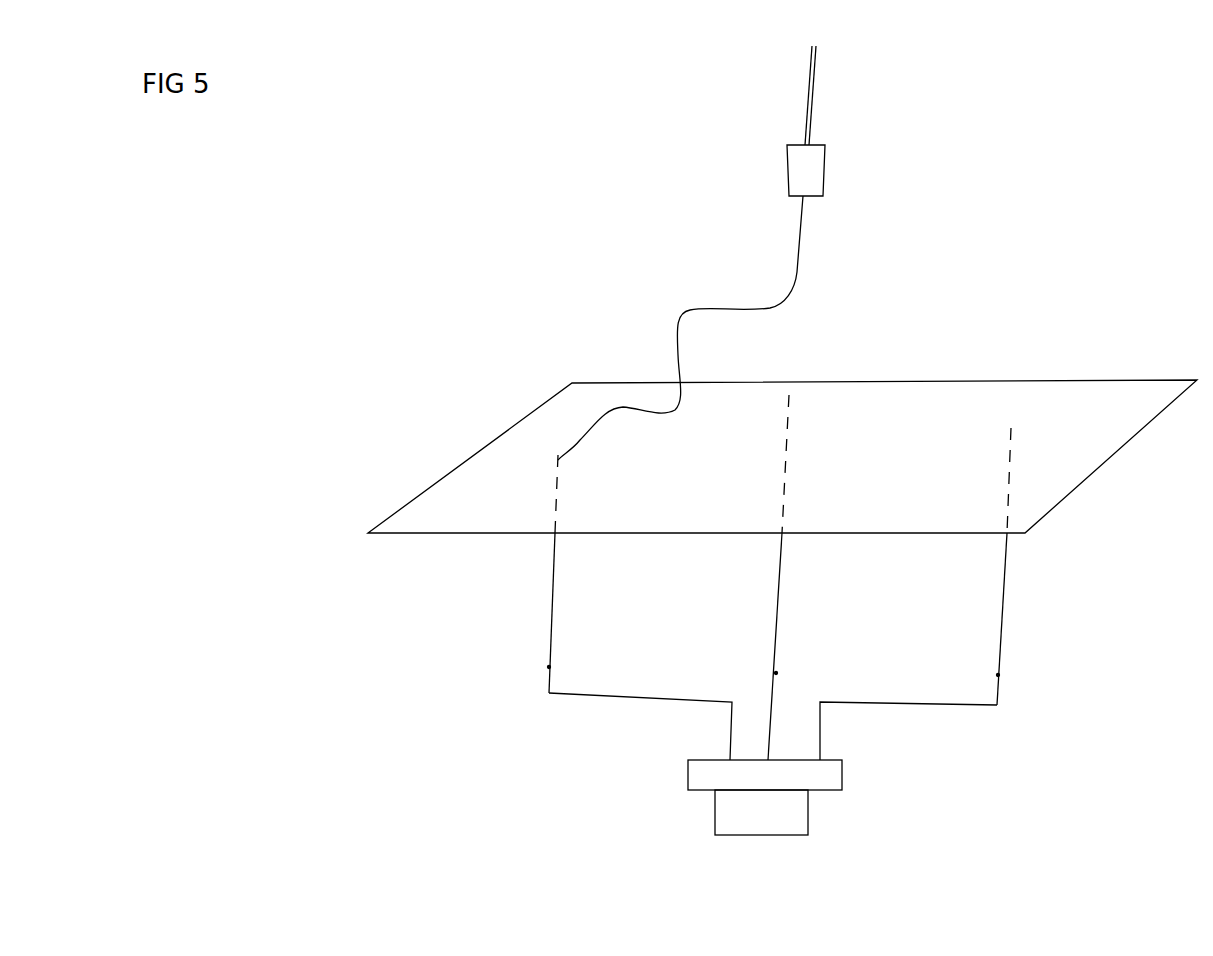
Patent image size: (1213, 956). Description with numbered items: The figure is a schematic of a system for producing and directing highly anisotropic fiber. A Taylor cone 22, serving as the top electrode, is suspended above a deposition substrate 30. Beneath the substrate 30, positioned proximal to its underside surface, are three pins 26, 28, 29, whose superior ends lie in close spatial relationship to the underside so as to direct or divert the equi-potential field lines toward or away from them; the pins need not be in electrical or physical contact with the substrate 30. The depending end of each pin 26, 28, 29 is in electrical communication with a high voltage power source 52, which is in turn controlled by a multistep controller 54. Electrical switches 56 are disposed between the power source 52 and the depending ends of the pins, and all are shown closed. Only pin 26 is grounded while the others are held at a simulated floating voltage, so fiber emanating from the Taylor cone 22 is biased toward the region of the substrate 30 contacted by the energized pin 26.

The Taylor cone 22 is at (805, 163).
The pin 26 is at (552, 588).
The pin 28 is at (782, 583).
The pin 29 is at (1008, 583).
The deposition substrate 30 is at (455, 500).
The high voltage power source 52 is at (710, 772).
The multistep controller 54 is at (785, 820).
The electrical switches 56 is at (540, 690).